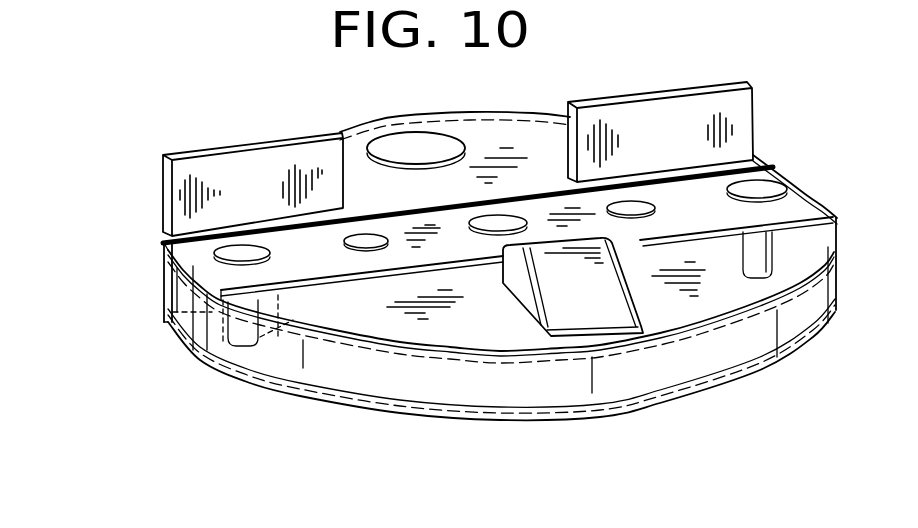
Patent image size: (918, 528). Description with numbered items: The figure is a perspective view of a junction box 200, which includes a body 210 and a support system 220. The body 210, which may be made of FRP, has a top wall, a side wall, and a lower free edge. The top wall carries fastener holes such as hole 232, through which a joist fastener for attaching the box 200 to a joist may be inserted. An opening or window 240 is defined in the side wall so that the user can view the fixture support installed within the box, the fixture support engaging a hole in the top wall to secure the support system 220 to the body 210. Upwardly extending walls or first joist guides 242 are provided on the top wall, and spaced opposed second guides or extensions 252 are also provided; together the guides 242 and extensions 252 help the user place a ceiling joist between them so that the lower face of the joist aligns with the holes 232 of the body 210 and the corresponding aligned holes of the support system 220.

The junction box 200 is at (427, 282).
The body 210 is at (283, 357).
The support system 220 is at (163, 243).
The hole 232 is at (630, 208).
The opening or window 240 is at (167, 320).
The first joist guides 242 is at (190, 167).
The second guides or extensions 252 is at (598, 310).